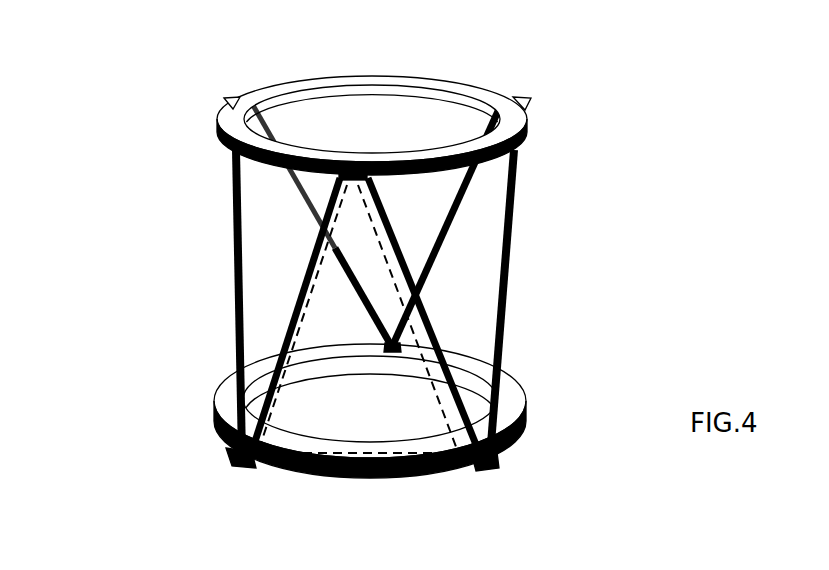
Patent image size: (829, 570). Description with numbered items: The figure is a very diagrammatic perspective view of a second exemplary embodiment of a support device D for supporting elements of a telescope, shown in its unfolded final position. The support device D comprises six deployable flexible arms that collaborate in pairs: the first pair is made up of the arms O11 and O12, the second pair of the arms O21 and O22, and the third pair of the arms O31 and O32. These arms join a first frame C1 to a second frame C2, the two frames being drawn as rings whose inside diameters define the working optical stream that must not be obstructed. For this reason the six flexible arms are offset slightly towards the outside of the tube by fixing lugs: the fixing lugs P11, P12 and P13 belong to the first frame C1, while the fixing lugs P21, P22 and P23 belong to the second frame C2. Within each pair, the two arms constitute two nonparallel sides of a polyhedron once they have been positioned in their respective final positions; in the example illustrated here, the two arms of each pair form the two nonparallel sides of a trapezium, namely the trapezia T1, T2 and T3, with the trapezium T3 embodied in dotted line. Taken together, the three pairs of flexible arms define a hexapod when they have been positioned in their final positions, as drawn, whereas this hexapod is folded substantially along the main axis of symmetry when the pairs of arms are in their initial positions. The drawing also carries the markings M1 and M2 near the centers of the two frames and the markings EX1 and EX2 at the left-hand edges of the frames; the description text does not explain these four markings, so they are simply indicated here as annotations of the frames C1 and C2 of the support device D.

The first frame C1 is at (298, 466).
The second frame C2 is at (318, 77).
The lower mirror/plate M1 is at (337, 417).
The upper mirror/plate M2 is at (382, 116).
The lower ring extremity EX1 is at (222, 446).
The upper ring extremity EX2 is at (218, 110).
The trapezium T1 is at (230, 248).
The trapezium T2 is at (522, 165).
The trapezium T3 is at (403, 246).
The fixing lug P11 is at (235, 466).
The fixing lug P12 is at (398, 346).
The fixing lug P13 is at (497, 458).
The fixing lug P21 is at (233, 96).
The fixing lug P22 is at (519, 96).
The fixing lug P23 is at (338, 181).
The flexible arm O11 is at (233, 166).
The flexible arm O12 is at (347, 275).
The flexible arm O21 is at (468, 192).
The flexible arm O22 is at (502, 330).
The flexible arm O31 is at (450, 403).
The flexible arm O32 is at (290, 333).
The support device D is at (668, 63).